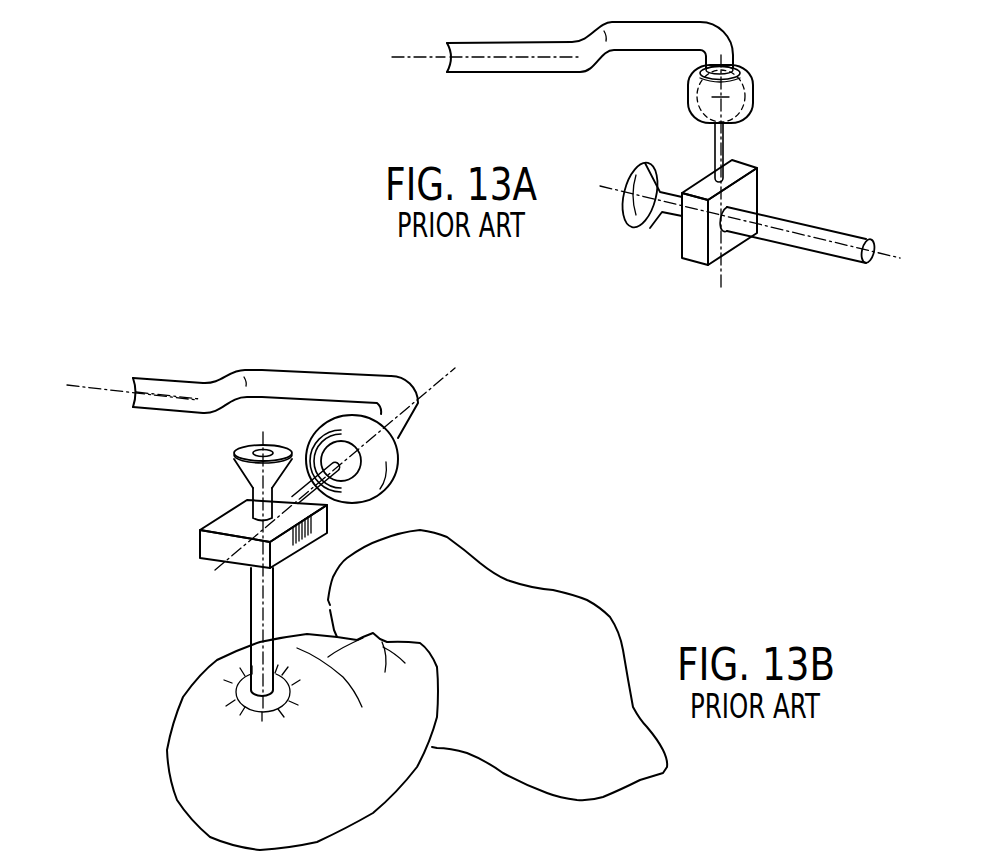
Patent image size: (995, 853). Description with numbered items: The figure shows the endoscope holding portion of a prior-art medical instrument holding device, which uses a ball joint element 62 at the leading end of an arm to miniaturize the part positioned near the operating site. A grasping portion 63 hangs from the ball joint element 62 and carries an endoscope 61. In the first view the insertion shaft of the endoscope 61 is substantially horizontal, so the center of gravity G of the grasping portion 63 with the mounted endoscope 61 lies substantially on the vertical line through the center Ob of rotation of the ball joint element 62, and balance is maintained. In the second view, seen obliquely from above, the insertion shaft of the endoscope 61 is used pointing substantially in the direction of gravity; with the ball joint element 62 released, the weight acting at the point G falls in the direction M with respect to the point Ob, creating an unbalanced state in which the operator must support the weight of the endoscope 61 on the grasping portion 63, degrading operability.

In FIG. 13A, the endoscope 61 is at (870, 264).
In FIG. 13B, the endoscope 61 is at (252, 608).
In FIG. 13A, the ball joint element 62 is at (752, 88).
In FIG. 13B, the ball joint element 62 is at (385, 458).
In FIG. 13A, the grasping portion 63 is at (748, 186).
In FIG. 13B, the grasping portion 63 is at (208, 550).
In FIG. 13A, the center of rotation of the ball joint element Ob is at (724, 96).
In FIG. 13B, the center of rotation of the ball joint element Ob is at (347, 457).
In FIG. 13A, the center of gravity of the grasping portion G is at (708, 222).
In FIG. 13B, the center of gravity of the grasping portion G is at (262, 530).
In FIG. 13B, the direction of fall of the weight M is at (272, 547).